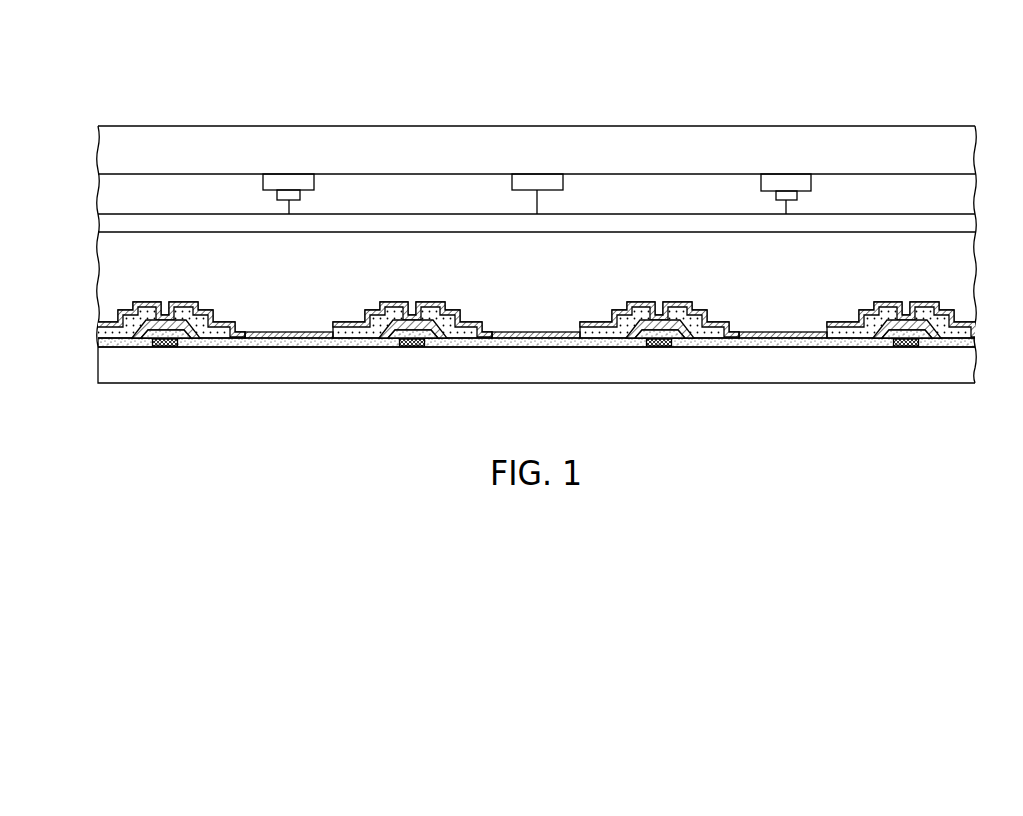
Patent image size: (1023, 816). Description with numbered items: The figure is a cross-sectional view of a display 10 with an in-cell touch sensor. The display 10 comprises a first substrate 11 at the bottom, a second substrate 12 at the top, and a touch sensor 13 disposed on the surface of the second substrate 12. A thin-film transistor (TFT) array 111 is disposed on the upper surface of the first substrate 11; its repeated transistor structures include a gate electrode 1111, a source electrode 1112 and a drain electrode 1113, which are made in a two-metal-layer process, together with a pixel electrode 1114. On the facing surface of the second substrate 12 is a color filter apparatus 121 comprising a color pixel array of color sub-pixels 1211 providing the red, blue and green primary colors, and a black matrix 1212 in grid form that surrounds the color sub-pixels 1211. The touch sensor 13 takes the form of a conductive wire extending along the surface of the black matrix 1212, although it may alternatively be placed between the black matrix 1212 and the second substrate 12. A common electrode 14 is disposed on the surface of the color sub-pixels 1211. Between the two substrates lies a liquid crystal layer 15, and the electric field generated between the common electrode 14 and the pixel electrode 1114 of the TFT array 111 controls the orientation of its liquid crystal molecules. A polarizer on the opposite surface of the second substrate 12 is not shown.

The display 10 is at (972, 92).
The first substrate 11 is at (113, 366).
The thin-film transistor (TFT) array 111 is at (518, 365).
The gate electrode 1111 is at (167, 343).
The source electrode 1112 is at (120, 343).
The drain electrode 1113 is at (213, 343).
The pixel electrode 1114 is at (260, 343).
The second substrate 12 is at (113, 154).
The color filter apparatus 121 is at (42, 172).
The color sub-pixels 1211 is at (113, 182).
The black matrix 1212 is at (262, 184).
The touch sensor 13 is at (822, 198).
The common electrode 14 is at (963, 221).
The liquid crystal layer 15 is at (963, 276).